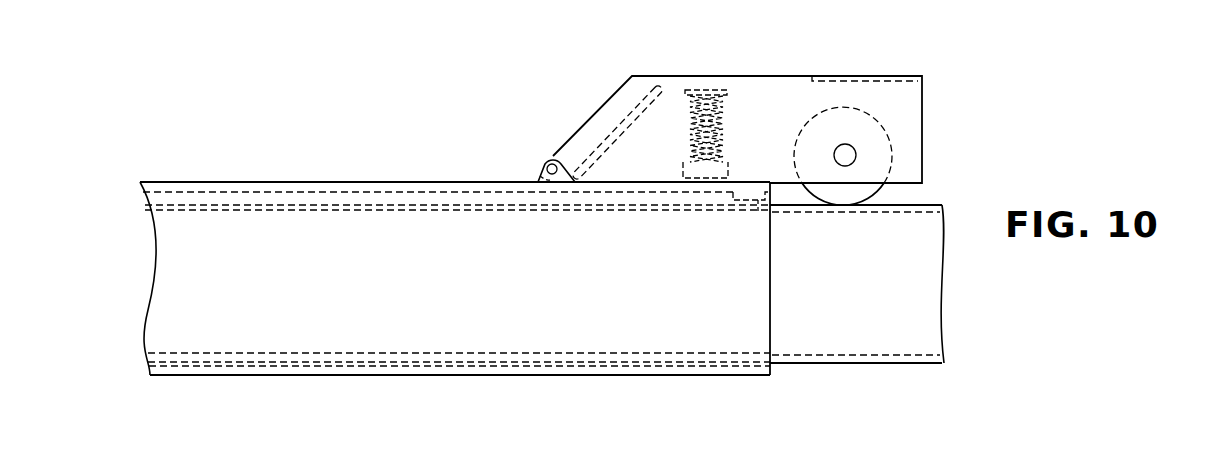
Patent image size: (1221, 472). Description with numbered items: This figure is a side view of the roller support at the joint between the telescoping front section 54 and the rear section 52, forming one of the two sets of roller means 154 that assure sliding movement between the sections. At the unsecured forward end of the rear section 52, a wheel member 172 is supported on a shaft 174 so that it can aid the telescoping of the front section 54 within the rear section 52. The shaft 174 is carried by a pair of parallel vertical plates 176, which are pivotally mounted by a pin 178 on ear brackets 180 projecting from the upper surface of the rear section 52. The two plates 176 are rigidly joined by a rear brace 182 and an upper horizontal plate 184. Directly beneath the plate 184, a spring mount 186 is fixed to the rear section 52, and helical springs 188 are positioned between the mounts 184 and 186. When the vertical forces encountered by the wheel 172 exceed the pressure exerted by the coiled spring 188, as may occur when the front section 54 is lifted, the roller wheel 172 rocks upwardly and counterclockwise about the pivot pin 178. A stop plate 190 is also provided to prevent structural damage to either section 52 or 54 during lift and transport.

The rear section 52 is at (191, 188).
The telescoping front section 54 is at (862, 290).
The roller means 154 is at (596, 68).
The wheel member 172 is at (874, 189).
The shaft 174 is at (845, 146).
The parallel vertical plates 176 is at (917, 103).
The pin 178 is at (551, 158).
The ear brackets 180 is at (537, 179).
The rear brace 182 is at (611, 139).
The upper horizontal plate 184 is at (700, 91).
The spring mount 186 is at (732, 181).
The helical springs 188 is at (722, 130).
The stop plate 190 is at (758, 206).